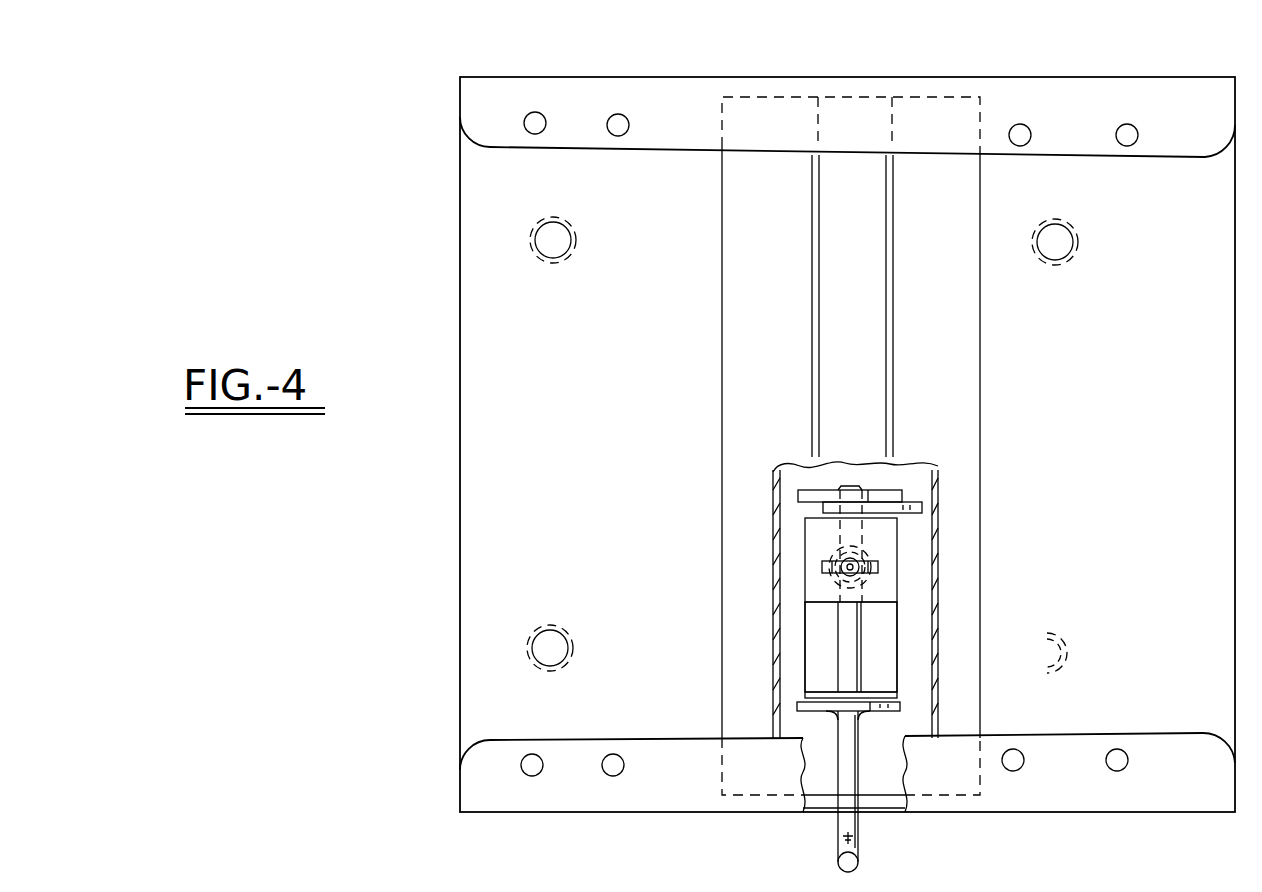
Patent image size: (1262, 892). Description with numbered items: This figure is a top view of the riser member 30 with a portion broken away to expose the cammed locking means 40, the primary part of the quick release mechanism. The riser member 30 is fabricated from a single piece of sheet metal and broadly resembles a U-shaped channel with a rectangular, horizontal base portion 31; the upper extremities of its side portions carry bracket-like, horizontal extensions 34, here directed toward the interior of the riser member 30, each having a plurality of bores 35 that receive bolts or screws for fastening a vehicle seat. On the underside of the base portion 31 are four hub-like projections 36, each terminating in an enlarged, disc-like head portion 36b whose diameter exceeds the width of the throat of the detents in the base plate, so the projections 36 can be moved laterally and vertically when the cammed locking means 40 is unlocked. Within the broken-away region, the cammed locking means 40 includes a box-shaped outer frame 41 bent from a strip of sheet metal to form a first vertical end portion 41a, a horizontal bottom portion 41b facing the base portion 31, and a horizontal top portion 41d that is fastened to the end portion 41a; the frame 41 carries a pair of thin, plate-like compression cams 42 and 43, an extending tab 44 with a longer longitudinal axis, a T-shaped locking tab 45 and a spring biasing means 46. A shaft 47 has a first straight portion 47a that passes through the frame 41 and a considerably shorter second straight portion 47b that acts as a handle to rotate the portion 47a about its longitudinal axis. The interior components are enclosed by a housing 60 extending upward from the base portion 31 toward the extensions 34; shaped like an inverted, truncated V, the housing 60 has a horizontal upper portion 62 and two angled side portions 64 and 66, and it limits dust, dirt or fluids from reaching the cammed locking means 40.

The riser member 30 is at (457, 538).
The base portion 31 is at (485, 607).
The bracket-like horizontal extensions 34 is at (1167, 97).
The bores 35 is at (616, 114).
The hub-like projections 36 is at (533, 237).
The disc-like head portion 36b is at (540, 258).
The cammed locking means 40 is at (801, 551).
The box-shaped outer frame 41 is at (803, 607).
The first vertical end portion 41a is at (873, 696).
The horizontal bottom portion 41b is at (812, 650).
The horizontal top portion 41d is at (886, 538).
The compression cam 42 is at (893, 490).
The compression cam 43 is at (876, 708).
The extending tab 44 is at (915, 507).
The T-shaped locking tab 45 is at (880, 563).
The spring biasing means 46 is at (862, 582).
The shaft 47 is at (834, 849).
The first straight portion 47a is at (856, 641).
The second straight portion 47b is at (859, 860).
The housing 60 is at (720, 220).
The horizontal upper portion 62 is at (866, 240).
The angled side portion 64 is at (745, 272).
The angled side portion 66 is at (950, 272).